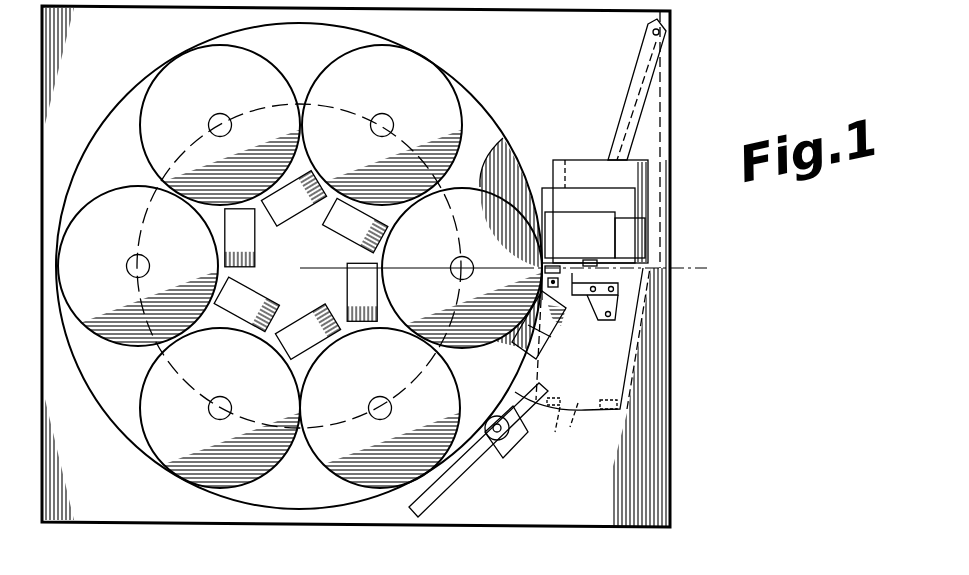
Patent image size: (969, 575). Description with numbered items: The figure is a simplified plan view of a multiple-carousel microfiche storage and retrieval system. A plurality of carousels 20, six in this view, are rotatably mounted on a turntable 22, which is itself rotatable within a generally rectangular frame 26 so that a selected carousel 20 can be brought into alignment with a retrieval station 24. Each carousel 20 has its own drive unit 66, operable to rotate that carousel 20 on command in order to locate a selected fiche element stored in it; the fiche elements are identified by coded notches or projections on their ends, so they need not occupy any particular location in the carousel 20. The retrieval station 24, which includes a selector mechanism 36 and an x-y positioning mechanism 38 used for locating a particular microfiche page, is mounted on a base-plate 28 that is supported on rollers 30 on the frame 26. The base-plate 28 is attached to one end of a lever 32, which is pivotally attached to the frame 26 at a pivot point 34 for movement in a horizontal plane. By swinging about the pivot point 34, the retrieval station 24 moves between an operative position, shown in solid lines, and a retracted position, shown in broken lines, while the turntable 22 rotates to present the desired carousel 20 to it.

The carousels 20 is at (460, 143).
The turntable 22 is at (110, 422).
The retrieval station 24 is at (595, 428).
The frame 26 is at (672, 470).
The base-plate 28 is at (630, 365).
The rollers 30 is at (559, 438).
The lever 32 is at (655, 58).
The pivot point 34 is at (663, 28).
The selector mechanism 36 is at (541, 335).
The x-y positioning mechanism 38 is at (609, 232).
The drive unit 66 is at (347, 233).